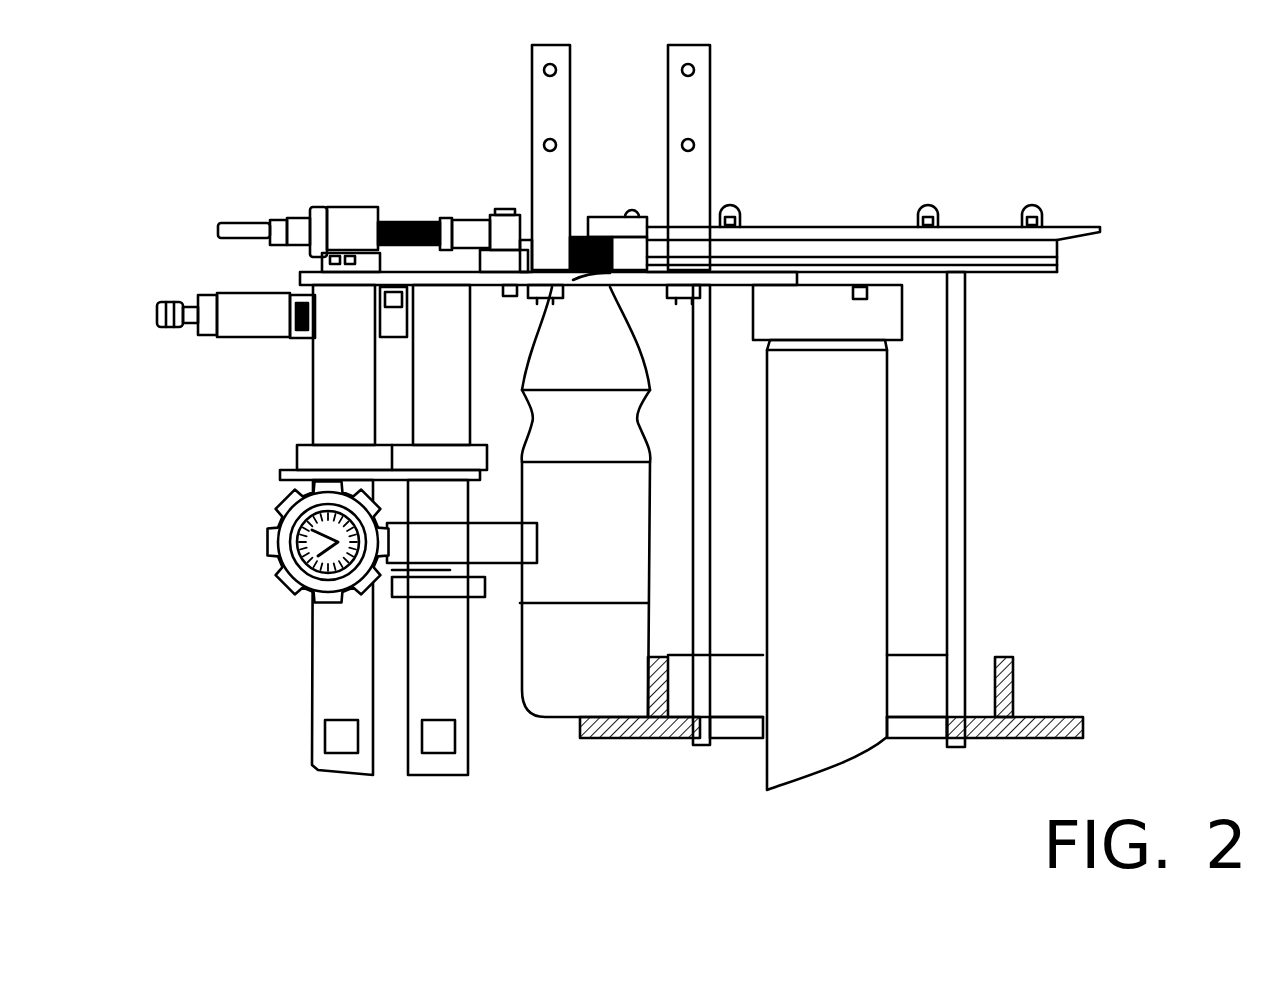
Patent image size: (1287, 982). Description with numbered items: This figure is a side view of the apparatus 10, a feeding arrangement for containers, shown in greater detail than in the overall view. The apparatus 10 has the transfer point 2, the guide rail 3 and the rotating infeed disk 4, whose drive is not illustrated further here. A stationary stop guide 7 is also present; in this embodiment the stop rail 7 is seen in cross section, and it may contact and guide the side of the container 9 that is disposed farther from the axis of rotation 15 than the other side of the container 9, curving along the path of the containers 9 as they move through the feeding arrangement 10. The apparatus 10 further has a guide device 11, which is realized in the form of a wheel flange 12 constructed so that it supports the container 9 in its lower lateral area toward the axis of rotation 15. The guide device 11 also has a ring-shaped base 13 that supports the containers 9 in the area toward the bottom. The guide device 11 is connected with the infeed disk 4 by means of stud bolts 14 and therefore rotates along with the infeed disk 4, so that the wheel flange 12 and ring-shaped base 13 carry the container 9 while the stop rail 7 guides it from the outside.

The transfer point 2 is at (608, 273).
The guide rail 3 is at (600, 228).
The rotating infeed disk 4 is at (965, 232).
The stationary stop guide 7 is at (503, 555).
The container 9 is at (594, 338).
The apparatus 10 is at (862, 145).
The guide device 11 is at (978, 658).
The wheel flange 12 is at (655, 655).
The ring-shaped base 13 is at (612, 740).
The stud bolts 14 is at (700, 490).
The axis of rotation 15 is at (848, 545).